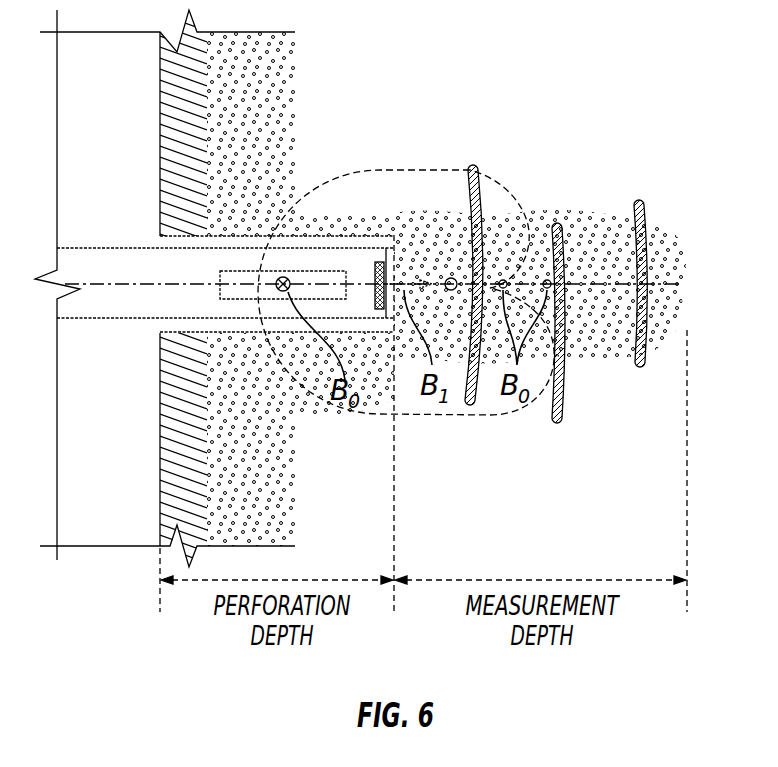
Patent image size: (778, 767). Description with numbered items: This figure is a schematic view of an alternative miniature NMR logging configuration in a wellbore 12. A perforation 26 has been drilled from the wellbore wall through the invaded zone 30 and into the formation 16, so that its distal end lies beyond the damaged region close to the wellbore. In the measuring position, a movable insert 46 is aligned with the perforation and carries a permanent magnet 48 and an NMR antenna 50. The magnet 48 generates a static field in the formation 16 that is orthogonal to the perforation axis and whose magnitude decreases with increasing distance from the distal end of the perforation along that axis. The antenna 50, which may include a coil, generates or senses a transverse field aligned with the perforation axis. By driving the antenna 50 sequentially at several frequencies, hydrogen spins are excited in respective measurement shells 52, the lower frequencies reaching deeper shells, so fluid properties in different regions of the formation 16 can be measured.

The wellbore 12 is at (124, 139).
The formation 16 is at (260, 150).
The perforation 26 is at (162, 242).
The invaded zone 30 is at (185, 455).
The movable insert 46 is at (115, 317).
The permanent magnet 48 is at (288, 277).
The NMR antenna 50 is at (380, 262).
The measurement shells 52 is at (473, 168).